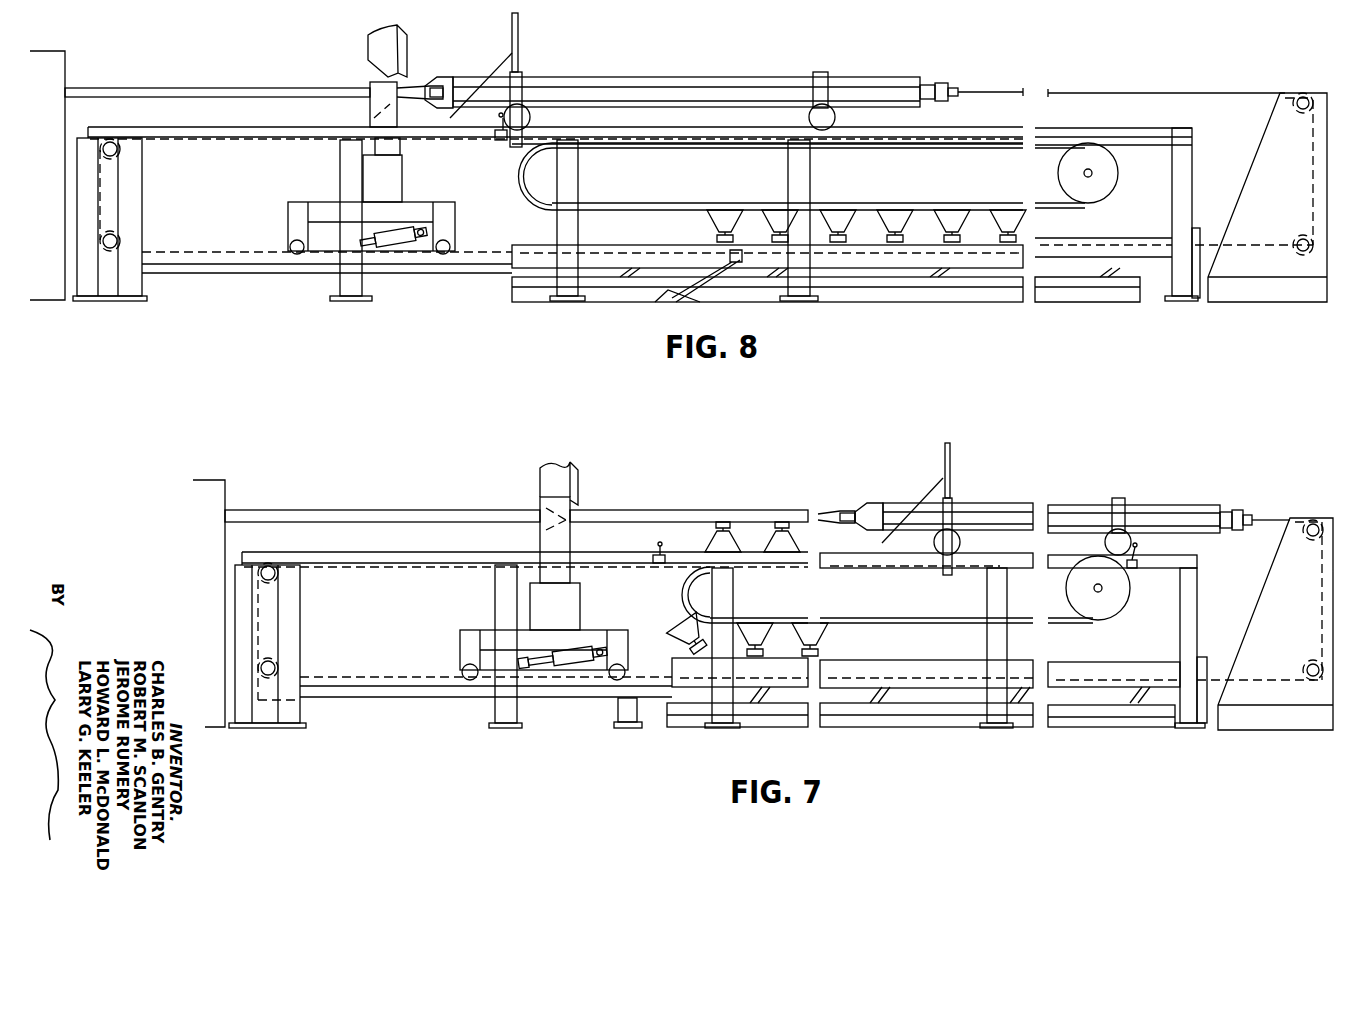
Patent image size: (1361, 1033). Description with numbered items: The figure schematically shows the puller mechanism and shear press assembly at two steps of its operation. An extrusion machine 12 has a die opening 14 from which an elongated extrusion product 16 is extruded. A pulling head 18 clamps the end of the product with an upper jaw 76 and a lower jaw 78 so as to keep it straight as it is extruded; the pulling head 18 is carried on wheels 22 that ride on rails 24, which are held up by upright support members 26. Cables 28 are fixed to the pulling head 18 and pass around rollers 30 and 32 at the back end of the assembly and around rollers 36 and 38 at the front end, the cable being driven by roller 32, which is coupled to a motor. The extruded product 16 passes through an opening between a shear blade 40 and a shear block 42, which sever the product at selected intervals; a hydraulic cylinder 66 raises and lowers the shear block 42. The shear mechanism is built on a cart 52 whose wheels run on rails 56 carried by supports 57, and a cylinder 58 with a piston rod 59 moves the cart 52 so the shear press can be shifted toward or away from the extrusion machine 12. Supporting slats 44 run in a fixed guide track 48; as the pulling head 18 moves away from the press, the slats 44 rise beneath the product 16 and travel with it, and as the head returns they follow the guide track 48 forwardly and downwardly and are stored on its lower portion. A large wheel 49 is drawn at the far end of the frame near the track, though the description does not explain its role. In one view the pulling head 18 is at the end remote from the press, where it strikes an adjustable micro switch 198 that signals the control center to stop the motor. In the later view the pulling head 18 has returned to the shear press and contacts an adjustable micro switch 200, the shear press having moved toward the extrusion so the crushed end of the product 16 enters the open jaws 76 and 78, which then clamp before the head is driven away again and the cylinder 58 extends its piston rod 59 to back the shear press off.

In FIG. 8, the extrusion machine 12 is at (60, 80).
In FIG. 7, the extrusion machine 12 is at (212, 494).
In FIG. 7, the die opening 14 is at (228, 510).
In FIG. 8, the extrusion product 16 is at (213, 90).
In FIG. 7, the extrusion product 16 is at (752, 511).
In FIG. 8, the pulling head 18 is at (448, 72).
In FIG. 7, the pulling head 18 is at (884, 497).
In FIG. 8, the wheels 22 is at (530, 118).
In FIG. 7, the wheels 22 is at (960, 542).
In FIG. 8, the rails 24 is at (1024, 170).
In FIG. 7, the rails 24 is at (885, 560).
In FIG. 8, the upright support members 26 is at (574, 191).
In FIG. 7, the upright support members 26 is at (1192, 638).
In FIG. 8, the cables 28 is at (216, 141).
In FIG. 7, the cables 28 is at (346, 568).
In FIG. 7, the roller 30 is at (1313, 523).
In FIG. 7, the roller 32 is at (1305, 666).
In FIG. 8, the roller 36 is at (117, 153).
In FIG. 8, the roller 38 is at (118, 239).
In FIG. 8, the shear blade 40 is at (390, 44).
In FIG. 7, the shear blade 40 is at (575, 481).
In FIG. 8, the shear block 42 is at (351, 85).
In FIG. 7, the shear block 42 is at (553, 541).
In FIG. 8, the supporting slats 44 is at (718, 214).
In FIG. 7, the supporting slats 44 is at (712, 542).
In FIG. 8, the guide track 48 is at (665, 144).
In FIG. 7, the guide track 48 is at (785, 620).
In FIG. 8, the drive wheel 49 is at (1105, 188).
In FIG. 7, the drive wheel 49 is at (1110, 605).
In FIG. 8, the cart 52 is at (316, 208).
In FIG. 7, the cart 52 is at (465, 638).
In FIG. 8, the rails 56 is at (307, 263).
In FIG. 7, the rails 56 is at (427, 687).
In FIG. 7, the supports 57 is at (627, 716).
In FIG. 8, the cylinder 58 is at (412, 232).
In FIG. 7, the cylinder 58 is at (580, 668).
In FIG. 7, the piston rod 59 is at (553, 673).
In FIG. 8, the hydraulic cylinder 66 is at (396, 168).
In FIG. 7, the hydraulic cylinder 66 is at (582, 605).
In FIG. 8, the upper jaw 76 is at (437, 86).
In FIG. 7, the upper jaw 76 is at (858, 513).
In FIG. 8, the lower jaw 78 is at (440, 98).
In FIG. 7, the lower jaw 78 is at (858, 524).
In FIG. 7, the micro switch 198 is at (1134, 569).
In FIG. 8, the micro switch 200 is at (503, 141).
In FIG. 7, the micro switch 200 is at (654, 558).